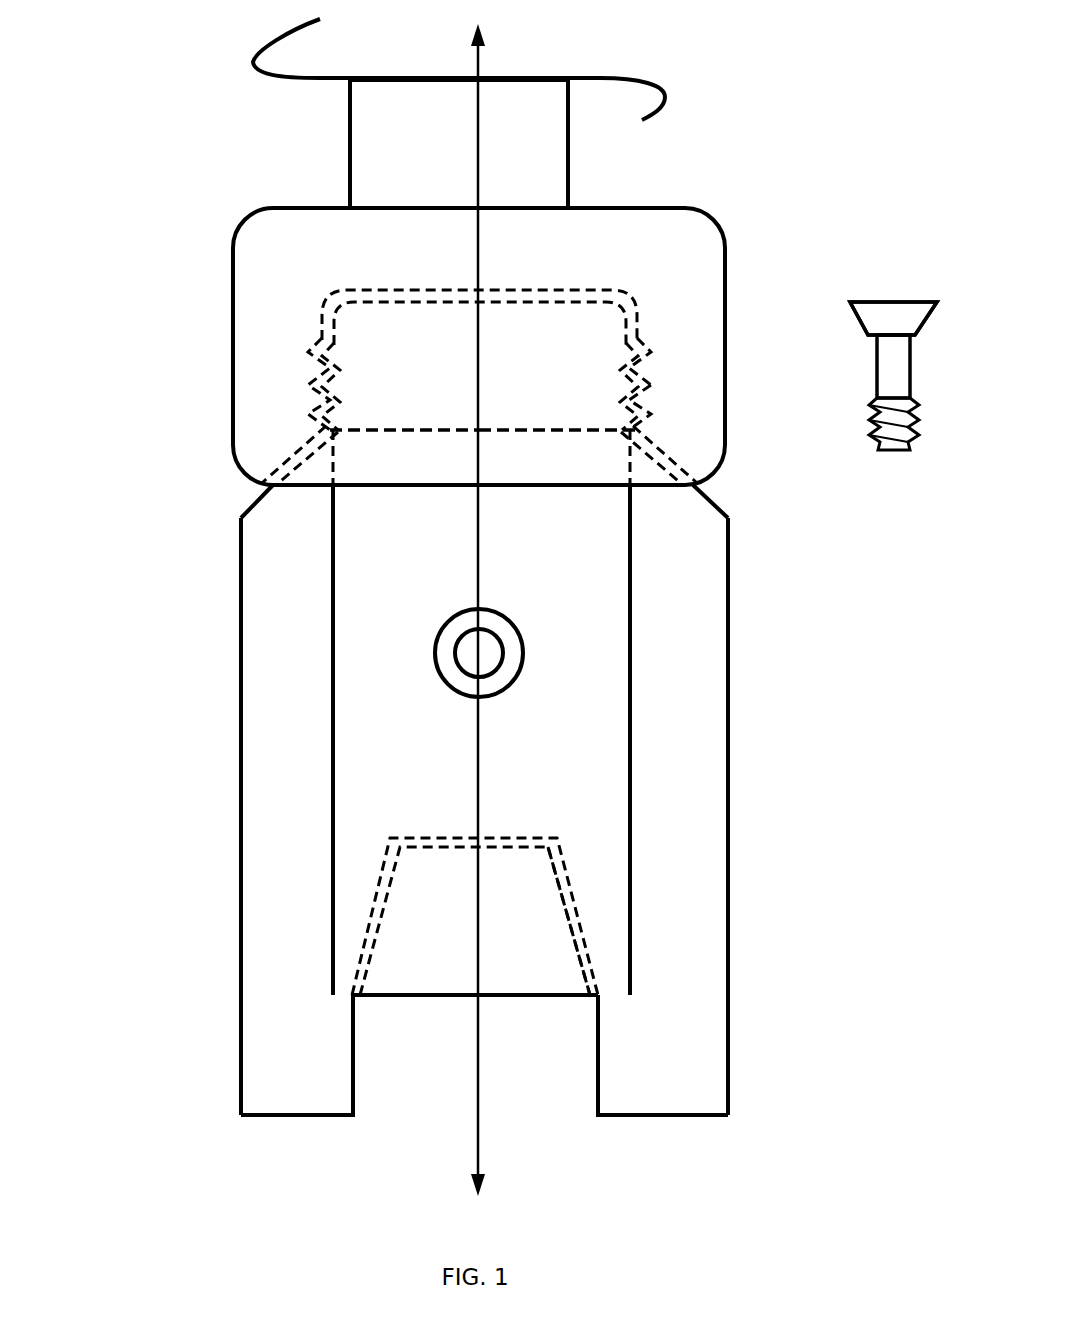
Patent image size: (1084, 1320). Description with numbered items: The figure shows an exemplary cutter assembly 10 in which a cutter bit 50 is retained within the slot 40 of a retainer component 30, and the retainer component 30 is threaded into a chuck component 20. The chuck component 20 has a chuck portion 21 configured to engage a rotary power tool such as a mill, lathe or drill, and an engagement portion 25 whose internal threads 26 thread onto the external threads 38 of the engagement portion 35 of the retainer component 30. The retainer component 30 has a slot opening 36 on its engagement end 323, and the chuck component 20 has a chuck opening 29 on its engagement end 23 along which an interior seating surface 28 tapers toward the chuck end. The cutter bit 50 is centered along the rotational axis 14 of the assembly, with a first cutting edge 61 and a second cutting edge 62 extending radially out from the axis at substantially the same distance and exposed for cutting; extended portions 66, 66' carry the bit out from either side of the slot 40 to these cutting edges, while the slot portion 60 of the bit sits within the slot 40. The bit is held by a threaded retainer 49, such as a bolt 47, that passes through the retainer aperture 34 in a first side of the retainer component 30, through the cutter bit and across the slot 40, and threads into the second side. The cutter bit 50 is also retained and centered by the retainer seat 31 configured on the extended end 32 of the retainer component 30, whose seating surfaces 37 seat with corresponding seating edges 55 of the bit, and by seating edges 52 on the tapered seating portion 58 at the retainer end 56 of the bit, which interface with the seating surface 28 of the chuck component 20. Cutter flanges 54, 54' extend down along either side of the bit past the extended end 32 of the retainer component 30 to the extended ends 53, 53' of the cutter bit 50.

The cutter assembly 10 is at (158, 566).
The rotational axis 14 is at (480, 1078).
The chuck component 20 is at (376, 154).
The chuck portion 21 is at (530, 178).
The engagement end 23 is at (668, 488).
The engagement portion 25 is at (275, 235).
The internal threads 26 is at (653, 417).
The seating surface 28 is at (275, 487).
The chuck opening 29 is at (407, 487).
The retainer component 30 is at (600, 688).
The retainer seat 31 is at (497, 963).
The extended end 32 is at (437, 997).
The retainer aperture 34 is at (478, 622).
The engagement portion 35 is at (637, 357).
The slot opening 36 is at (387, 300).
The seating surfaces 37 is at (383, 868).
The external threads 38 is at (650, 390).
The slot 40 is at (633, 590).
The bolt 47 is at (882, 315).
The threaded retainer 49 is at (507, 673).
The cutter bit 50 is at (260, 621).
The seating edges 52 is at (308, 440).
The extended end 53 is at (319, 1168).
The extended end 53' is at (678, 1169).
The cutter flange 54 is at (251, 1039).
The cutter flange 54' is at (729, 1039).
The seating edges 55 is at (586, 973).
The retainer end 56 is at (372, 430).
The seating portion 58 is at (507, 452).
The slot portion 60 is at (246, 510).
The first cutting edge 61 is at (236, 768).
The second cutting edge 62 is at (730, 822).
The extended portion 66 is at (184, 800).
The extended portion 66' is at (791, 1077).
The engagement end 323 is at (522, 297).